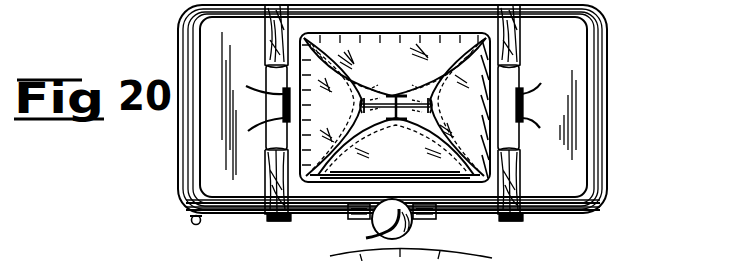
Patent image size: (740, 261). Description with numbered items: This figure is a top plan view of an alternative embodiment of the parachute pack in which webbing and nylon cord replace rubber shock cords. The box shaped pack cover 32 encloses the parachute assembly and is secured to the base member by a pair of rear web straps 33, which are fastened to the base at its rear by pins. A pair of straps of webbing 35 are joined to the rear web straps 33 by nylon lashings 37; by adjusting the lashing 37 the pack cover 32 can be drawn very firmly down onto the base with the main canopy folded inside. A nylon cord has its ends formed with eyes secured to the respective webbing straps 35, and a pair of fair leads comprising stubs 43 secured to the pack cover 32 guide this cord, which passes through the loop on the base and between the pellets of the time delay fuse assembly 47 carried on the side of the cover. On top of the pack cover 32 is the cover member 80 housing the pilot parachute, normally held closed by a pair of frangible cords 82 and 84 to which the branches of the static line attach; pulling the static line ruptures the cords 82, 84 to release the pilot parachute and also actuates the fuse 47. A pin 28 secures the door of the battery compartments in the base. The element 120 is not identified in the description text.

The pin 28 is at (190, 228).
The pack cover 32 is at (598, 140).
The web straps 33 is at (266, 32).
The straps of webbing 35 is at (266, 181).
The nylon lashings 37 is at (263, 146).
The stubs 43 is at (276, 223).
The time delay fuse assembly 47 is at (416, 232).
The cover member 80 is at (395, 107).
The frangible cord 82 is at (436, 106).
The frangible cord 84 is at (396, 95).
The hook lever 120 is at (374, 228).